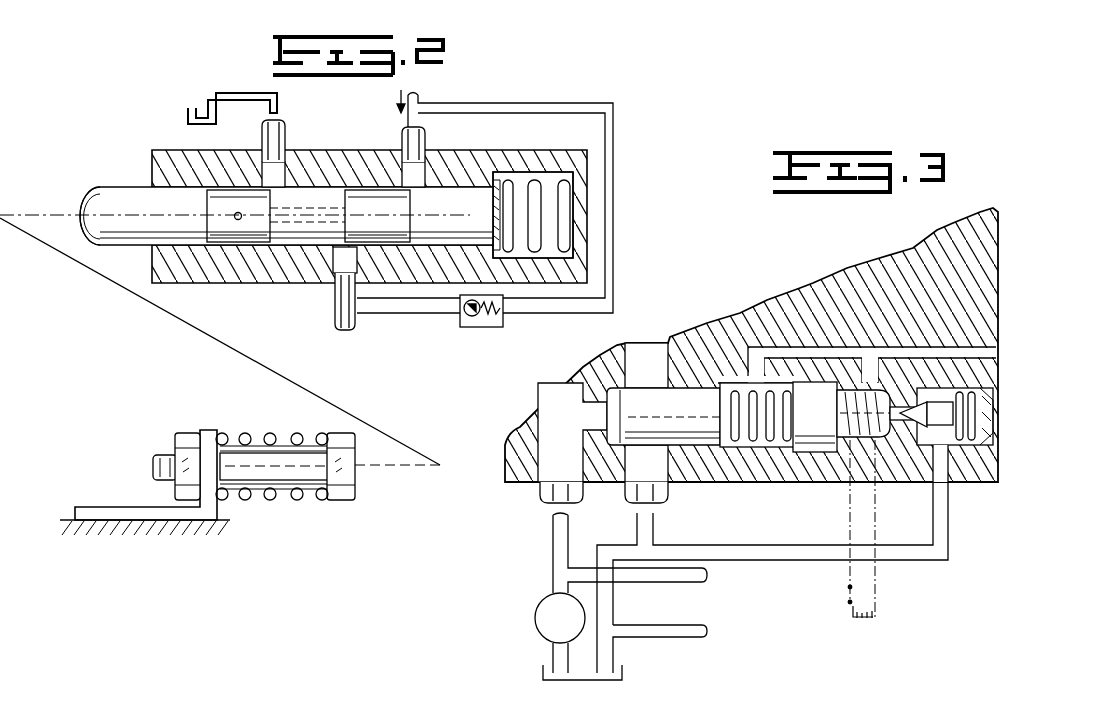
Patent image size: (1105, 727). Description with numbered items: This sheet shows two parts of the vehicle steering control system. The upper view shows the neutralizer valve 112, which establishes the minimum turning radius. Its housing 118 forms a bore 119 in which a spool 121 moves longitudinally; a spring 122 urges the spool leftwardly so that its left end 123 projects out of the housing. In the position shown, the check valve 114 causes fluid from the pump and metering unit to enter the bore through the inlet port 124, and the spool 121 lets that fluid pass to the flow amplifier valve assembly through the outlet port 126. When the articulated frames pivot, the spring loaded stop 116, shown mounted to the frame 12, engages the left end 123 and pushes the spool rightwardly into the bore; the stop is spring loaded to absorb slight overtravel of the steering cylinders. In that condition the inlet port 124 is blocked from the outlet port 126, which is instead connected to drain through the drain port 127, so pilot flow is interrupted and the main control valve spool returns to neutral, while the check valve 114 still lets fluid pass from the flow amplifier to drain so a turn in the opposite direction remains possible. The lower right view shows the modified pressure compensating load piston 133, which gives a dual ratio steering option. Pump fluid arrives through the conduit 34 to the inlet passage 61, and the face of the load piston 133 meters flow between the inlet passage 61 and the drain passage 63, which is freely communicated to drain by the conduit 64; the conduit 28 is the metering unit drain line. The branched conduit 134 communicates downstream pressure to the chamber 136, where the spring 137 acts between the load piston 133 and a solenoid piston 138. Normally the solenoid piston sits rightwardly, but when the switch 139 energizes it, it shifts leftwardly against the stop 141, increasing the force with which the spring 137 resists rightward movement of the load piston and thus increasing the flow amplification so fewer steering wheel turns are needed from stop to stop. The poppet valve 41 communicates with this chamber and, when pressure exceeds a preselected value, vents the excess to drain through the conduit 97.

In FIG. 2, the neutralizer valve 112 is at (138, 160).
In FIG. 2, the check valve 114 is at (477, 327).
In FIG. 2, the spring loaded stop 116 is at (290, 515).
In FIG. 2, the housing 118 is at (243, 273).
In FIG. 2, the bore 119 is at (217, 245).
In FIG. 2, the spool 121 is at (158, 219).
In FIG. 2, the spring 122 is at (538, 178).
In FIG. 2, the left end 123 is at (85, 205).
In FIG. 2, the inlet port 124 is at (399, 170).
In FIG. 2, the outlet port 126 is at (340, 273).
In FIG. 2, the drain port 127 is at (258, 168).
In FIG. 2, the frame 12 is at (223, 532).
In FIG. 3, the branched conduit 134 is at (820, 347).
In FIG. 3, the spring 137 is at (733, 373).
In FIG. 3, the drain passage 63 is at (656, 366).
In FIG. 3, the inlet passage 61 is at (571, 429).
In FIG. 3, the conduit 64 is at (629, 491).
In FIG. 3, the load piston 133 is at (690, 455).
In FIG. 3, the chamber 136 is at (730, 449).
In FIG. 3, the solenoid piston 138 is at (815, 417).
In FIG. 3, the stop 141 is at (773, 449).
In FIG. 3, the poppet valve 41 is at (928, 388).
In FIG. 3, the conduit 34 is at (557, 538).
In FIG. 3, the conduit 28 is at (655, 628).
In FIG. 3, the conduit 97 is at (923, 560).
In FIG. 3, the switch 139 is at (845, 597).